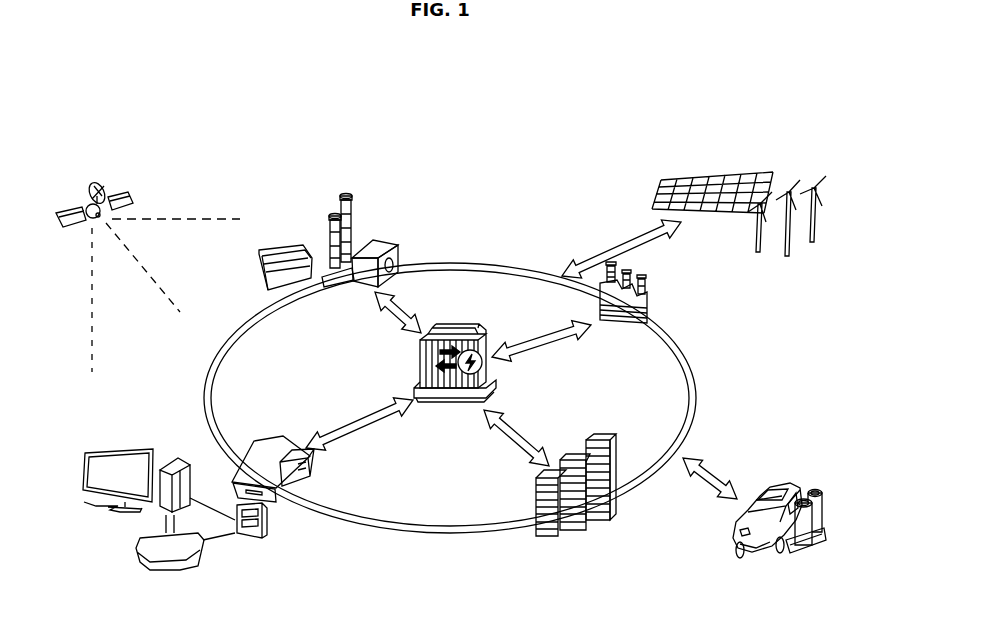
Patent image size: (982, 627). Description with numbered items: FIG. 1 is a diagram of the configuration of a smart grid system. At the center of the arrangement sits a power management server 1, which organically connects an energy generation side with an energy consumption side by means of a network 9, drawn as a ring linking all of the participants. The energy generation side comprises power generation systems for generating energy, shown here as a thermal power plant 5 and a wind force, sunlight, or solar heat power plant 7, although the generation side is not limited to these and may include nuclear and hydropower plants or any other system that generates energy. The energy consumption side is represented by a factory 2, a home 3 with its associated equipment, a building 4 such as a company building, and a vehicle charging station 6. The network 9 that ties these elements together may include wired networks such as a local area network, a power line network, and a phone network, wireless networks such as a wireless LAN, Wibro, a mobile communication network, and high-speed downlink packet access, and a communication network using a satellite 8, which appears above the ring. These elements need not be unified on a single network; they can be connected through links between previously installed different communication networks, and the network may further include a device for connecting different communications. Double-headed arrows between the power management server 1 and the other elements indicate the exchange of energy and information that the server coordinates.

The power management server 1 is at (463, 331).
The factory 2 is at (380, 244).
The home 3 is at (266, 436).
The building 4 is at (580, 534).
The thermal power plant 5 is at (648, 296).
The vehicle charging station 6 is at (786, 486).
The solar or wind power plant 7 is at (818, 178).
The satellite 8 is at (100, 184).
The network 9 is at (411, 533).